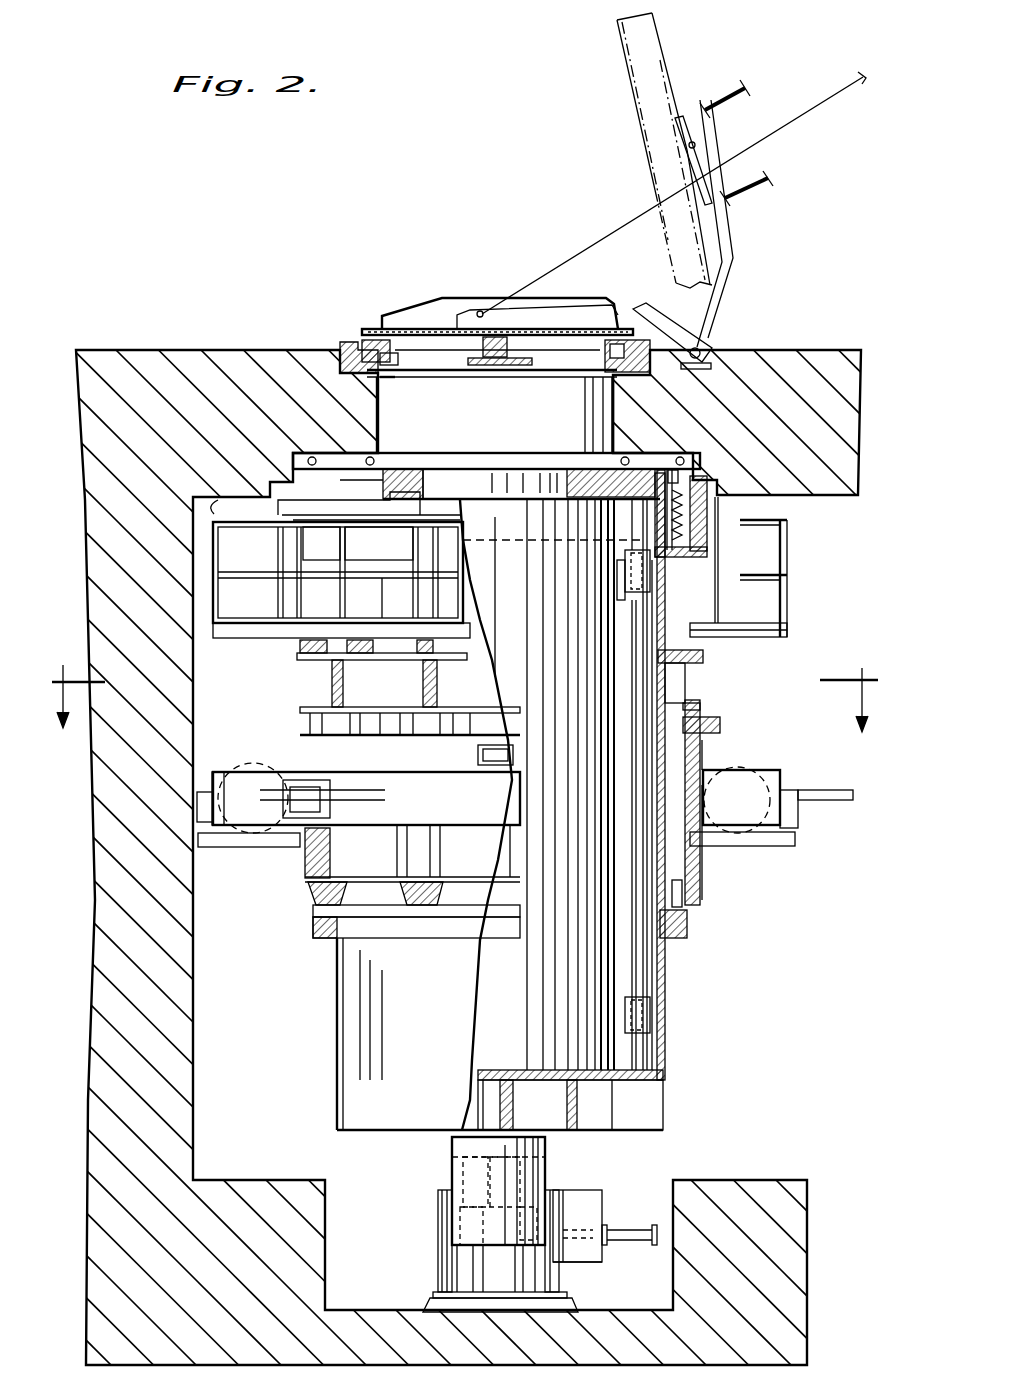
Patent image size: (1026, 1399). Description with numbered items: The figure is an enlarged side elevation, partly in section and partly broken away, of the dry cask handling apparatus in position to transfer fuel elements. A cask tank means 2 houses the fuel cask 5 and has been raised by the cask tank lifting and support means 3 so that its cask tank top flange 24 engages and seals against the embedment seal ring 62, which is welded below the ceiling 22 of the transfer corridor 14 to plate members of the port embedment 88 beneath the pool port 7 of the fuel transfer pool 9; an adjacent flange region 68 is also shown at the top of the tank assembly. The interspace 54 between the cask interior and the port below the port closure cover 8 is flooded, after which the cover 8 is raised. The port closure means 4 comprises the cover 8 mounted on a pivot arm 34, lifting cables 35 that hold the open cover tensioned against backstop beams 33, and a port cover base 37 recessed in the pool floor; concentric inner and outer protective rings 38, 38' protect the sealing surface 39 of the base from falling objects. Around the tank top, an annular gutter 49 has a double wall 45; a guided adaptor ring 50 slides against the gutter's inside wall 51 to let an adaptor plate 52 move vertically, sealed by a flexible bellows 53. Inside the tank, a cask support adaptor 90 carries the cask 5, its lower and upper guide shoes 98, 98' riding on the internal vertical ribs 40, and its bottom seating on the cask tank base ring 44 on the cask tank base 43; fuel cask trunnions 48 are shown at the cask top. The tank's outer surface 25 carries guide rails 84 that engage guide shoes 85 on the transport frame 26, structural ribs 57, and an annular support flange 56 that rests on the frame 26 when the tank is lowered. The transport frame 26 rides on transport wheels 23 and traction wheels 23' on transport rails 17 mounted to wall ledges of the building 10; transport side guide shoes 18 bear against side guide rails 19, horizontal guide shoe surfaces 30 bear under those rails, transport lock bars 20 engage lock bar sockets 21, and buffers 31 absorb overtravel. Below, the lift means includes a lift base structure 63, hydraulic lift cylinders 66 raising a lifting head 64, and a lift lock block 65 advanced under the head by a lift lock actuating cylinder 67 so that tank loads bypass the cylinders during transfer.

The cask tank means 2 is at (663, 1037).
The cask tank lifting and support means 3 is at (471, 711).
The port closure means 4 is at (537, 299).
The cask 5 is at (518, 641).
The pool port 7 is at (480, 413).
The port closure cover 8 is at (408, 310).
The fuel transfer pool 9 is at (522, 245).
The building 10 is at (196, 1062).
The transfer corridor 14 is at (800, 988).
The transport rails 17 is at (773, 850).
The transport side guide shoes 18 is at (298, 773).
The transport side guide rails 19 is at (270, 797).
The transport lock bars 20 is at (480, 753).
The lock bar sockets 21 is at (495, 768).
The ceiling 22 is at (235, 511).
The transport wheels 23 is at (253, 782).
The traction wheels 23' is at (749, 785).
The cask tank top flange 24 is at (733, 503).
The outer surface of the tank 25 is at (663, 965).
The transport frame 26 is at (773, 770).
The horizontal guide shoe surfaces 30 is at (300, 813).
The buffers 31 is at (202, 790).
The backstop beams 33 is at (752, 98).
The pivot arm 34 is at (658, 300).
The lifting cables 35 is at (612, 232).
The port cover base 37 is at (365, 370).
The inner protective ring 38 is at (498, 313).
The outer protective ring 38' is at (336, 332).
The sealing surface 39 is at (382, 370).
The vertical extending ribs 40 is at (650, 700).
The cask tank base 43 is at (647, 1108).
The cask tank base ring 44 is at (580, 1065).
The gutter wall 45 is at (705, 548).
The fuel cask trunnions 48 is at (620, 590).
The annular gutter 49 is at (700, 563).
The guided adaptor ring 50 is at (620, 412).
The inside wall of the gutter 51 is at (657, 527).
The adaptor plate 52 is at (582, 470).
The flexible bellows 53 is at (710, 528).
The interspace 54 is at (482, 443).
The annular support flange 56 is at (712, 657).
The structural ribs 57 is at (290, 593).
The embedment seal ring 62 is at (807, 495).
The lift base structure 63 is at (558, 1277).
The lifting head 64 is at (547, 1148).
The lift lock block 65 is at (573, 1207).
The hydraulic lift cylinders 66 is at (468, 1267).
The lift lock actuating cylinder 67 is at (628, 1230).
The bolt flange 68 is at (387, 460).
The guide rails 84 is at (428, 690).
The guide shoes 85 is at (700, 715).
The port embedment 88 is at (600, 384).
The cask support adaptor 90 is at (637, 977).
The lower guide shoes 98 is at (675, 1015).
The upper guide shoes 98' is at (665, 579).